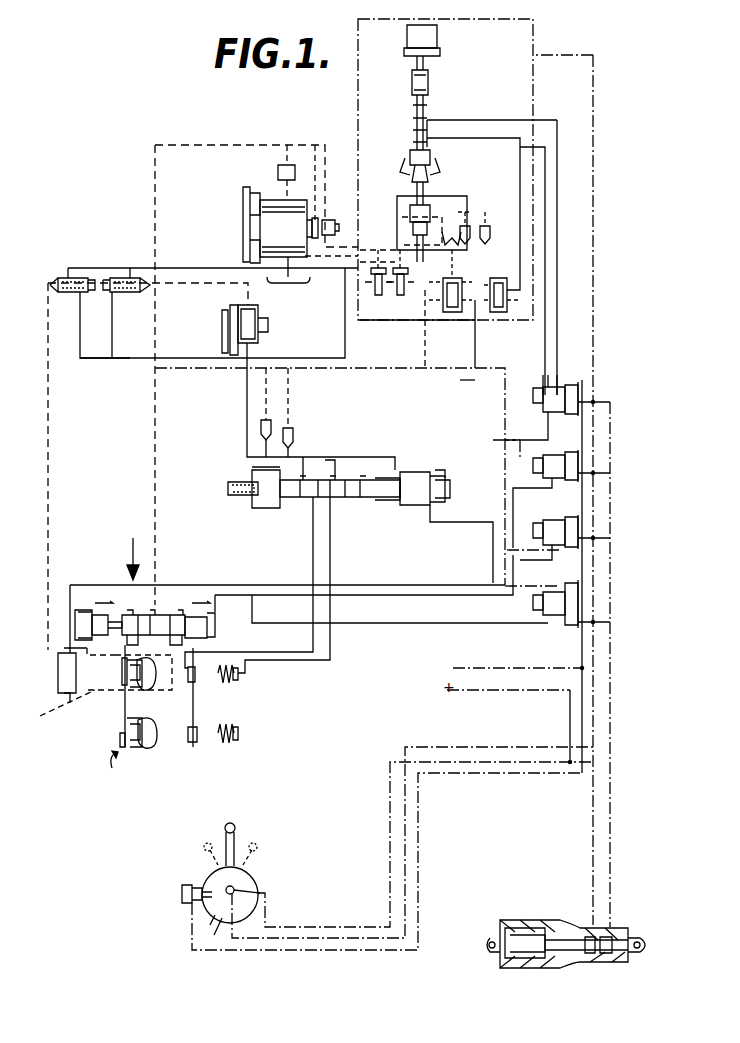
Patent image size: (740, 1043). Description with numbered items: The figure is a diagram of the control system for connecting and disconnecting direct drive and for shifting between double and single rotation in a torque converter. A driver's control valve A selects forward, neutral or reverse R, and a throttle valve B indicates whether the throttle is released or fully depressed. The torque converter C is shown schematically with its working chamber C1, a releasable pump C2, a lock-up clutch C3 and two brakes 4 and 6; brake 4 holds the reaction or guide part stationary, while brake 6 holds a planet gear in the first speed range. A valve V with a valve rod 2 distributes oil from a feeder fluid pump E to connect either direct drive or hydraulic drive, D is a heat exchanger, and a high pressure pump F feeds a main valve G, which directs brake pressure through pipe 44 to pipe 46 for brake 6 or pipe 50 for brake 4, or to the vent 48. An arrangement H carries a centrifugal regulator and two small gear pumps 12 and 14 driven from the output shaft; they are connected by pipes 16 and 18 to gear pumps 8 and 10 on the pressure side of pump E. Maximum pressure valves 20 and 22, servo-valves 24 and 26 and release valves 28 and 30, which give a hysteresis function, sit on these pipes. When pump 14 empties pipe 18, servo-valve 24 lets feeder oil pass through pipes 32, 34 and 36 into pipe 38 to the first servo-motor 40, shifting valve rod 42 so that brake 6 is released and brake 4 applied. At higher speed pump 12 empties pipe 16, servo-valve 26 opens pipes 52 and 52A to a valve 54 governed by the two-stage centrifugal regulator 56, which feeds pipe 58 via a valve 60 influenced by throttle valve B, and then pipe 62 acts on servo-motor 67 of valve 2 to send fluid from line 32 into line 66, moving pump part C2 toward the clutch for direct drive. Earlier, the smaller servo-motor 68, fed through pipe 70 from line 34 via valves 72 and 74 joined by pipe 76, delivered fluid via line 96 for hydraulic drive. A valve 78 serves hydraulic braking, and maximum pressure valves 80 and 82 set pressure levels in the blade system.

The valve rod 2 is at (150, 616).
The brake 4 is at (193, 747).
The brake 6 is at (238, 736).
The gear pump 8 is at (316, 218).
The gear pump 10 is at (328, 220).
The gear pump 12 is at (412, 208).
The gear pump 14 is at (428, 226).
The pipe 16 is at (345, 258).
The pipe 18 is at (372, 250).
The maximum pressure valve 20 is at (466, 212).
The maximum pressure valve 22 is at (487, 212).
The servo-valve 24 is at (456, 283).
The servo-valve 26 is at (510, 278).
The release valve 28 is at (374, 290).
The release valve 30 is at (397, 283).
The pipe 32 is at (215, 145).
The pipe 34 is at (408, 373).
The pipe 36 is at (425, 346).
The pipe 38 is at (475, 344).
The first servo-motor 40 is at (430, 478).
The valve rod 42 is at (388, 480).
The pipe 44 is at (247, 420).
The pipe 46 is at (338, 560).
The vent 48 is at (330, 465).
The pipe 50 is at (313, 565).
The pipe 52 is at (521, 210).
The pipe 52A is at (480, 120).
The valve 54 is at (415, 108).
The two-stage centrifugal regulator 56 is at (412, 180).
The pipe 58 is at (558, 130).
The valve 60 is at (562, 385).
The pipe 62 is at (553, 418).
The line 66 is at (56, 706).
The servo-motor 67 is at (80, 616).
The smaller servo-motor 68 is at (208, 618).
The pipe 70 is at (516, 586).
The valve 72 is at (550, 455).
The valve 74 is at (553, 555).
The pipe 76 is at (550, 500).
The valve 78 is at (556, 612).
The maximum pressure valve 80 is at (130, 292).
The maximum pressure valve 82 is at (66, 292).
The line 96 is at (176, 680).
The driver's control valve A is at (250, 870).
The throttle valve B is at (562, 965).
The torque converter C is at (118, 763).
The torque converter working chamber C1 is at (156, 745).
The releasable pump C2 is at (132, 685).
The lock-up clutch C3 is at (122, 672).
The heat exchanger D is at (58, 675).
The feeder fluid pump E is at (243, 232).
The high pressure pump F is at (222, 330).
The main valve G is at (375, 500).
The arrangement H is at (440, 108).
The reverse R is at (425, 945).
The valve V is at (128, 549).